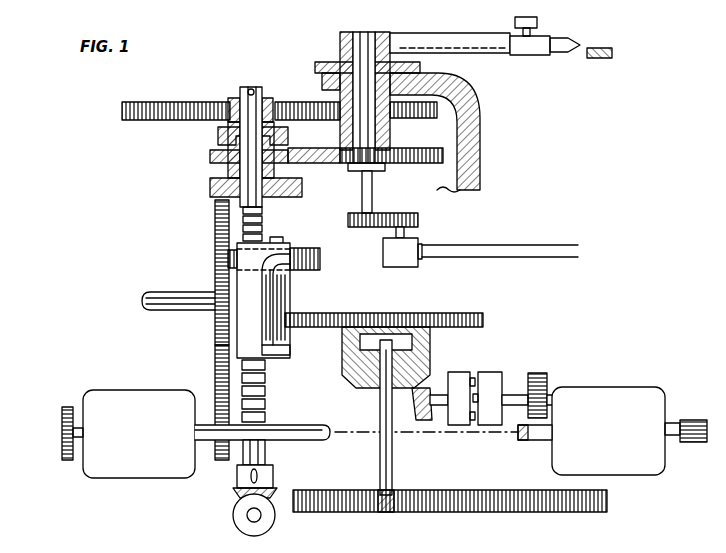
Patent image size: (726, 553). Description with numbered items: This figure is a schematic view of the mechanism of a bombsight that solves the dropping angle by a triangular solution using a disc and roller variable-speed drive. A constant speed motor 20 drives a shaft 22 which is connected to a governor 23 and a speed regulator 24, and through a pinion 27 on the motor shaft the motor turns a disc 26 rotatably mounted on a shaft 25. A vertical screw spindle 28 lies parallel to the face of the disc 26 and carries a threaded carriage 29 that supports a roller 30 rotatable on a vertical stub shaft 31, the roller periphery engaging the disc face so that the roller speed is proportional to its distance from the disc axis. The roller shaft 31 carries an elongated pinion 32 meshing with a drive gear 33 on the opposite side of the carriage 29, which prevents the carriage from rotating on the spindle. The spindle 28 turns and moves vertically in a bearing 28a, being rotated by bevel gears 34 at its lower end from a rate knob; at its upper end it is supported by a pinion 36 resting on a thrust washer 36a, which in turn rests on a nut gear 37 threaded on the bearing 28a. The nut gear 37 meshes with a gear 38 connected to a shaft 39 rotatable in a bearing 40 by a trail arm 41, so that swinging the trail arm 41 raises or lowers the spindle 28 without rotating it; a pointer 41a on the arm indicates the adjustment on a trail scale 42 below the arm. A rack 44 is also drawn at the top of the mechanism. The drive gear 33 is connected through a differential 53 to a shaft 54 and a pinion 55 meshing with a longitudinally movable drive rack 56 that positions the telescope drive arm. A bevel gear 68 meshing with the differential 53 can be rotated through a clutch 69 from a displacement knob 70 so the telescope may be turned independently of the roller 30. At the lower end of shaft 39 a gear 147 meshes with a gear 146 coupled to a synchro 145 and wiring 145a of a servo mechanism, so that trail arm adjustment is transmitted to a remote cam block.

The constant speed motor 20 is at (638, 462).
The shaft 22 is at (312, 428).
The governor 23 is at (142, 468).
The speed regulator 24 is at (65, 440).
The shaft 25 is at (178, 297).
The disc 26 is at (215, 330).
The pinion 27 is at (221, 462).
The vertical screw spindle 28 is at (265, 396).
The spindle bearing 28a is at (210, 188).
The carriage 29 is at (246, 288).
The roller 30 is at (321, 258).
The vertical stub shaft 31 is at (277, 237).
The elongated pinion 32 is at (280, 291).
The drive gear 33 is at (485, 318).
The bevel gears 34 is at (242, 508).
The pinion 36 is at (263, 96).
The thrust washer 36a is at (218, 130).
The nut gear 37 is at (210, 157).
The gear 38 is at (443, 155).
The shaft 39 is at (360, 44).
The bearing 40 is at (390, 126).
The trail arm 41 is at (470, 36).
The pointer 41a is at (583, 44).
The trail scale 42 is at (596, 60).
The rack gear 44 is at (122, 110).
The differential 53 is at (432, 353).
The shaft 54 is at (386, 463).
The pinion 55 is at (386, 505).
The drive rack 56 is at (535, 498).
The bevel gear 68 is at (422, 414).
The clutch 69 is at (470, 376).
The displacement knob 70 is at (540, 375).
The synchro 145 is at (404, 260).
The wiring 145a is at (537, 245).
The gear 146 is at (420, 220).
The gear 147 is at (377, 214).